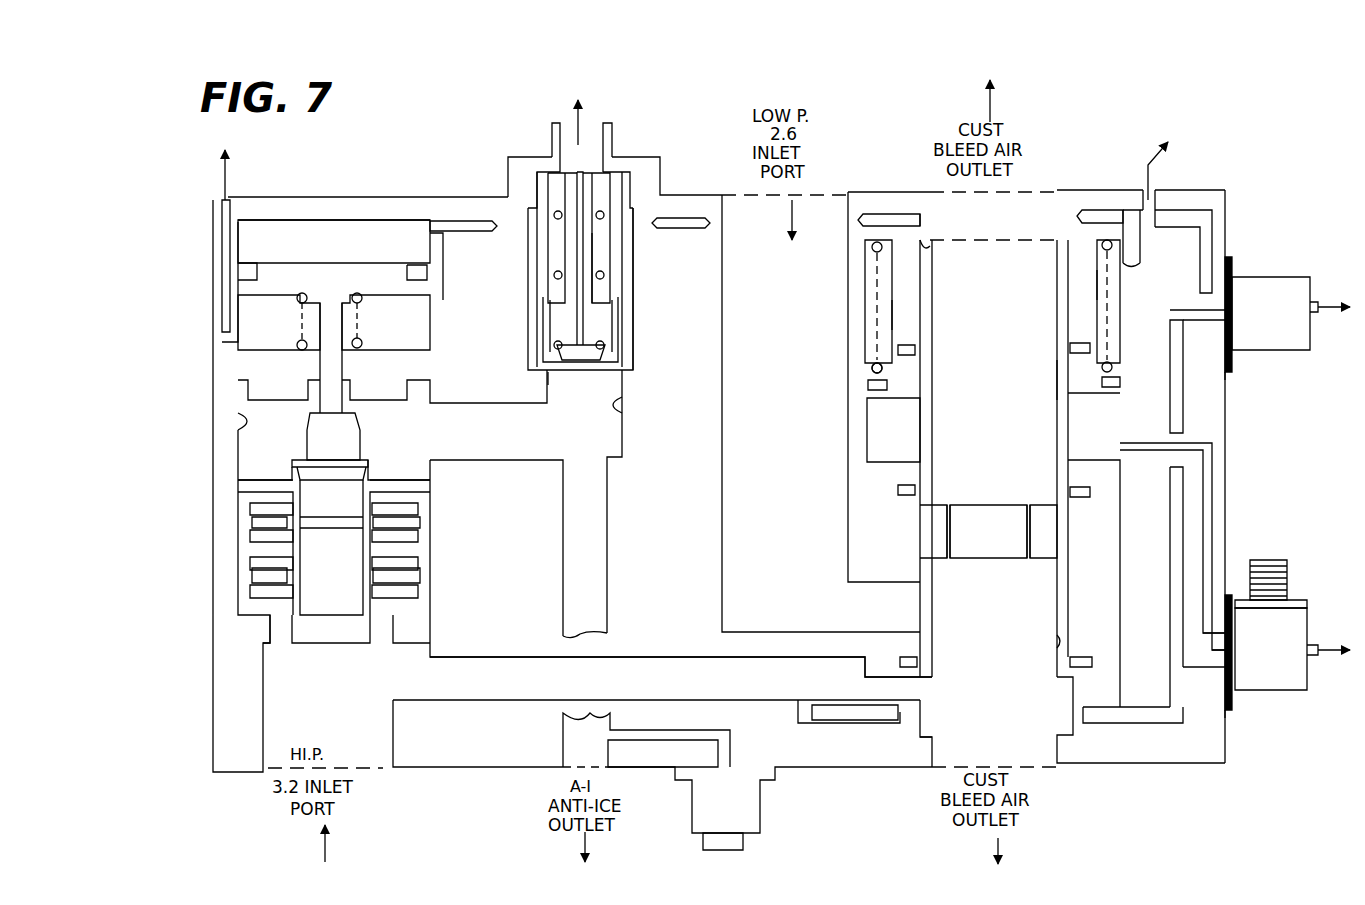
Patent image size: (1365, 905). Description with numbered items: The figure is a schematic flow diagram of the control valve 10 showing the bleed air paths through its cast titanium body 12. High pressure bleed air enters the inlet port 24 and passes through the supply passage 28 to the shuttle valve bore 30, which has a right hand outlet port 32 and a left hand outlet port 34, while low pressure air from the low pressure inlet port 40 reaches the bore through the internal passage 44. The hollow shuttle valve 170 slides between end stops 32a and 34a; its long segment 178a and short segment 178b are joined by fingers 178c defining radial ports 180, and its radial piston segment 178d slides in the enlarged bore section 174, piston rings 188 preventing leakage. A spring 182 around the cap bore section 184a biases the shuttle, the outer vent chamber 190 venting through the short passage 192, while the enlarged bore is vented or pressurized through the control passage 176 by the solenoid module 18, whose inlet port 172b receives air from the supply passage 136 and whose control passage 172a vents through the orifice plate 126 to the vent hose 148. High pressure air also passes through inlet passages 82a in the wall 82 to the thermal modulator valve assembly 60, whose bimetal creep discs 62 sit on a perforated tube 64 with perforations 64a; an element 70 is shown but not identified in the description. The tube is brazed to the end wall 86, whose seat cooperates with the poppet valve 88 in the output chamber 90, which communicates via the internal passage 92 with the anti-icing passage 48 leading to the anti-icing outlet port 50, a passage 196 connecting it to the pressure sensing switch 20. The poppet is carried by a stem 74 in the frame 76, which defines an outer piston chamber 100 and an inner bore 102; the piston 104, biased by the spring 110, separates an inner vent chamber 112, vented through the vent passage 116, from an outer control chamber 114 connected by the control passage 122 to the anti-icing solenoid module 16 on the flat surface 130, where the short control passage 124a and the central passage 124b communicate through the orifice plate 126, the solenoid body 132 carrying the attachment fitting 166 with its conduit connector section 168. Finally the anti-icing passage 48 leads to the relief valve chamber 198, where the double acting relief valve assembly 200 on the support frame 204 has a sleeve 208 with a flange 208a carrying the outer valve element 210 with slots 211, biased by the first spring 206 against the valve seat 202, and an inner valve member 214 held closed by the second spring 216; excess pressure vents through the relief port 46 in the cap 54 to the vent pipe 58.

The control valve 10 is at (981, 793).
The valve body 12 is at (210, 775).
The solenoid control valve module 16 is at (1273, 272).
The solenoid control valve module 18 is at (1313, 614).
The pressure sensing switch 20 is at (690, 803).
The high pressure inlet port 24 is at (393, 722).
The internal supply passage 28 is at (758, 681).
The shuttle valve cylinder bore 30 is at (1085, 712).
The right hand bleed air outlet port 32 is at (934, 756).
The end stop 32a is at (925, 733).
The left hand bleed air outlet port 34 is at (928, 218).
The end stop 34a is at (925, 247).
The low pressure bleed air inlet port 40 is at (724, 277).
The internal passage 44 is at (880, 587).
The relief outlet or venting port 46 is at (560, 157).
The internal anti-icing passage 48 is at (620, 406).
The anti-icing outlet port 50 is at (562, 725).
The flanged cap element 54 is at (512, 162).
The vent pipe 58 is at (552, 137).
The thermal modulator valve assembly 60 is at (250, 542).
The bimetal creep discs 62 is at (420, 507).
The perforated stainless steel tube 64 is at (302, 602).
The ports or perforations 64a is at (370, 523).
The seals 70 is at (420, 522).
The valve stem 74 is at (335, 376).
The cast titanium frame 76 is at (257, 373).
The integral wall 82 is at (330, 633).
The inlet passages 82a is at (272, 625).
The annular end wall 86 is at (256, 478).
The poppet valve 88 is at (333, 470).
The output chamber 90 is at (240, 416).
The internal passage 92 is at (470, 460).
The outer piston chamber 100 is at (325, 228).
The inner cylindrical bore 102 is at (458, 312).
The piston 104 is at (290, 278).
The coiled spring 110 is at (300, 340).
The inner vent chamber 112 is at (386, 321).
The outer control chamber 114 is at (334, 250).
The longitudinal vent passage 116 is at (228, 268).
The internal control passage 122 is at (455, 228).
The short control passage 124a is at (1217, 287).
The central passage 124b is at (1225, 312).
The orifice plate 126 is at (1232, 368).
The flat surface 130 is at (1227, 500).
The solenoid body 132 is at (1256, 483).
The supply passage 136 is at (860, 720).
The vent hose 148 is at (1320, 305).
The attachment fitting 166 is at (1276, 604).
The conduit connector section 168 is at (1284, 560).
The shuttle valve 170 is at (994, 458).
The control passage 172a is at (1233, 632).
The bleed air inlet port 172b is at (1213, 662).
The enlarged bore section 174 is at (875, 425).
The control passage 176 is at (1136, 448).
The long segment 178a is at (1065, 374).
The short segment 178b is at (1062, 642).
The fingers 178c is at (948, 506).
The radial piston segment 178d is at (1082, 393).
The radial ports 180 is at (950, 585).
The annular coiled spring 182 is at (873, 366).
The cylindrical bore section 184a is at (902, 311).
The piston rings 188 is at (870, 385).
The outer vent chamber 190 is at (885, 287).
The short passage 192 is at (1128, 258).
The passage 196 is at (652, 740).
The relief valve chamber 198 is at (630, 308).
The double-acting relief valve assembly 200 is at (530, 298).
The internal valve seat 202 is at (552, 375).
The valve support frame 204 is at (593, 200).
The first coiled valve spring 206 is at (604, 280).
The hollow sleeve 208 is at (548, 250).
The radial flange portion 208a is at (545, 290).
The outer valve element 210 is at (540, 355).
The slots 211 is at (543, 325).
The inner valve member 214 is at (583, 362).
The second valve spring 216 is at (605, 345).